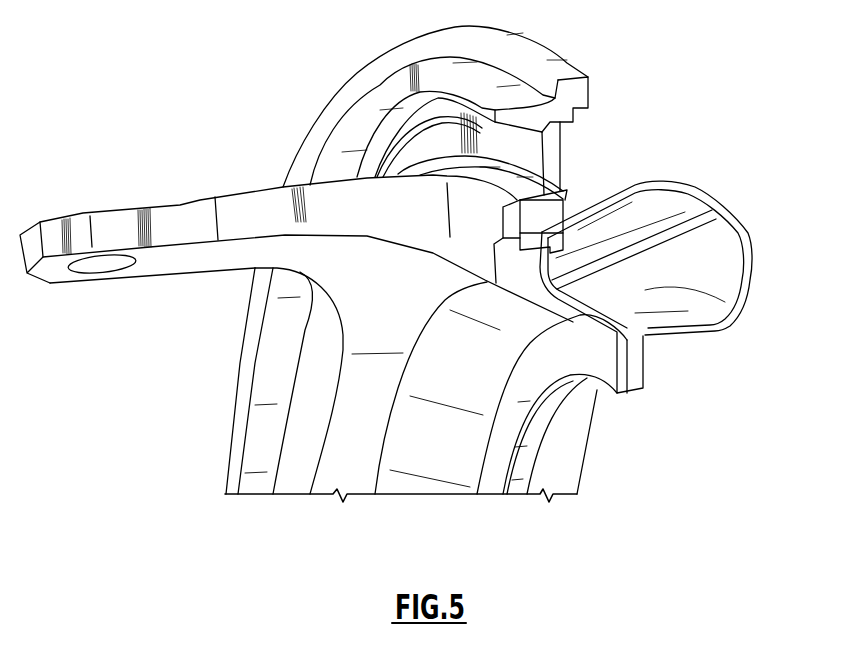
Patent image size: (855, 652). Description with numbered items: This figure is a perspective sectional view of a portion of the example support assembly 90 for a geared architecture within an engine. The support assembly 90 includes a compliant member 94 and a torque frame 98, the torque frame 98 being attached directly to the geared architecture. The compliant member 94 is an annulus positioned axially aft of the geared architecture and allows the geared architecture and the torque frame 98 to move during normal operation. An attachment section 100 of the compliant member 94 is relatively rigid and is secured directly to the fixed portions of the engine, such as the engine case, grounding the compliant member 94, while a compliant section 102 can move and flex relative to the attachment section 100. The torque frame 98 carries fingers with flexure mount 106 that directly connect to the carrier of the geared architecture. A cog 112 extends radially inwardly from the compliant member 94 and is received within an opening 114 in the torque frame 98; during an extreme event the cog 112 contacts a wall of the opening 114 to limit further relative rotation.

The support assembly 90 is at (690, 105).
The compliant member 94 is at (707, 202).
The torque frame 98 is at (249, 195).
The attachment section 100 is at (560, 167).
The compliant section 102 is at (750, 262).
The fingers with flexure mount 106 is at (100, 186).
The cog 112 is at (530, 218).
The opening 114 is at (545, 229).